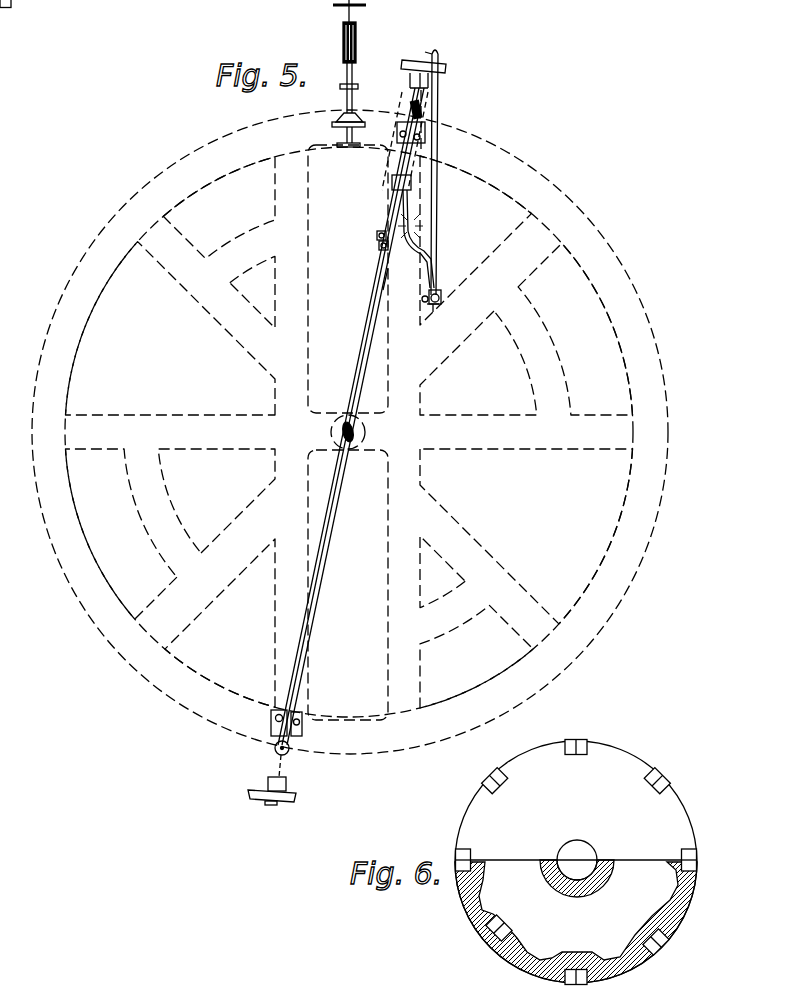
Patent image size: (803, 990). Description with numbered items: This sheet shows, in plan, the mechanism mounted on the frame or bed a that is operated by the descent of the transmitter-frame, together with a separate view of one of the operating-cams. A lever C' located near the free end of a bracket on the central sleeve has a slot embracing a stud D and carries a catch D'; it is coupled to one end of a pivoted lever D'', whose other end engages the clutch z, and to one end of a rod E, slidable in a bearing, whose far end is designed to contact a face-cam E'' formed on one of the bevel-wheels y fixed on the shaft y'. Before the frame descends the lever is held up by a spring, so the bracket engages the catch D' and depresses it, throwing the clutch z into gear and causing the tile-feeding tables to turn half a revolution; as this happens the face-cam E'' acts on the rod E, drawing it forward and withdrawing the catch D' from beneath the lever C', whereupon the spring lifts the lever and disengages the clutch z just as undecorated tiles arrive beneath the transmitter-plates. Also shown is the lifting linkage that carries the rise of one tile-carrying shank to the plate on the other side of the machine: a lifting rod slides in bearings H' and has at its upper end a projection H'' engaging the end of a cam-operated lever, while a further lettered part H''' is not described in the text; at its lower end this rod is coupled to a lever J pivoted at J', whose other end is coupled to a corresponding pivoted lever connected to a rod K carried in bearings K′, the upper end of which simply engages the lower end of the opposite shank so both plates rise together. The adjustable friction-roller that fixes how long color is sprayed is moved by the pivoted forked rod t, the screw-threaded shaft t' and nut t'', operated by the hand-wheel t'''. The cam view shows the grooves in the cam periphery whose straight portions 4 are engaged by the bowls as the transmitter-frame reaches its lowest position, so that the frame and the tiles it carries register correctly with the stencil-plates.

In FIG. 5, the frame or bed a is at (167, 272).
In FIG. 5, the lever J is at (348, 416).
In FIG. 5, the pivot J' is at (366, 243).
In FIG. 5, the rod K is at (290, 748).
In FIG. 5, the bearings K′ is at (303, 713).
In FIG. 5, the bevel-wheels y is at (382, 439).
In FIG. 5, the shaft y' is at (337, 527).
In FIG. 5, the pivoted forked rod t is at (356, 135).
In FIG. 5, the screw-threaded shaft t' is at (355, 91).
In FIG. 5, the nut t'' is at (367, 42).
In FIG. 5, the hand-wheel t''' is at (369, 11).
In FIG. 5, the rod E is at (448, 162).
In FIG. 5, the face-cam E'' is at (444, 29).
In FIG. 5, the bearings H' is at (429, 120).
In FIG. 5, the projection H'' is at (430, 136).
In FIG. 5, the guide clamp H''' is at (447, 122).
In FIG. 5, the clutch z is at (392, 183).
In FIG. 5, the stud D is at (448, 281).
In FIG. 5, the catch D' is at (442, 260).
In FIG. 5, the pivoted lever D'' is at (413, 239).
In FIG. 5, the lever C' is at (412, 313).
In FIG. 6, the lever C' is at (576, 880).
In FIG. 6, the straight portions of the groove 4 is at (581, 754).